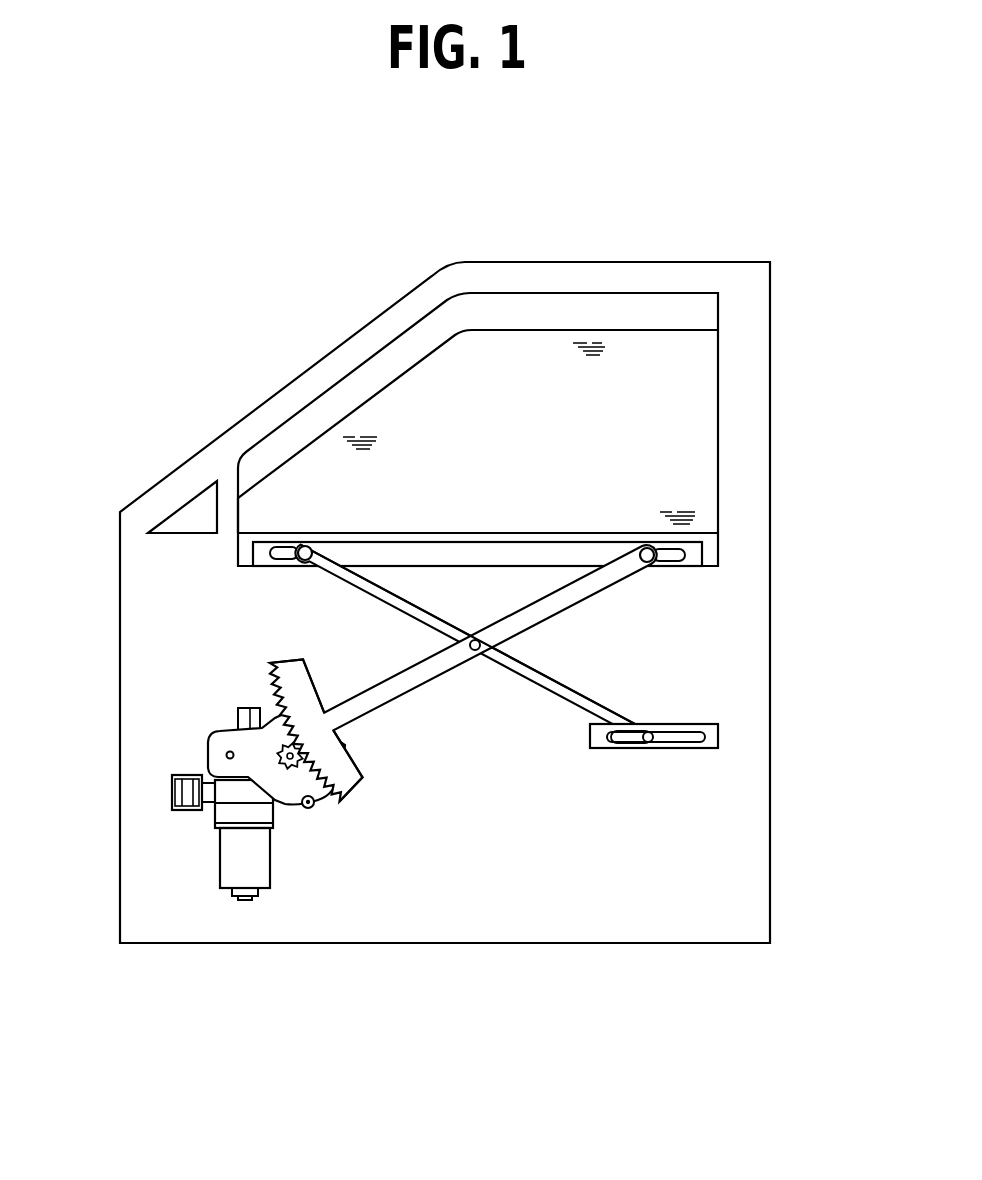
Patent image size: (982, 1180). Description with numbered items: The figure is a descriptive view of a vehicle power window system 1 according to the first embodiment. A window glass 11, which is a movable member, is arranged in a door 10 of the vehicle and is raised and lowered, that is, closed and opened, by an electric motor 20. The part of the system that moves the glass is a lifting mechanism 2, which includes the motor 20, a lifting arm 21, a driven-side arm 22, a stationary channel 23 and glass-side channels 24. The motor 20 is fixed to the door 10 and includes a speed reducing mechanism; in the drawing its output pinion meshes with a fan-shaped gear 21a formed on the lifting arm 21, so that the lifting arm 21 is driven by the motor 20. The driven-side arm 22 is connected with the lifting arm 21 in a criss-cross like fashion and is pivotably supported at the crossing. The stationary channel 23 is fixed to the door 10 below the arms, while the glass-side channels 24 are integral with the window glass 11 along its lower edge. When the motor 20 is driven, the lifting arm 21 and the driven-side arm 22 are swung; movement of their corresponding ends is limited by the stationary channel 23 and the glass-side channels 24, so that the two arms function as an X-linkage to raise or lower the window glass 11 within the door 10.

The power window system 1 is at (203, 376).
The lifting mechanism 2 is at (185, 690).
The door 10 is at (745, 642).
The window glass 11 is at (507, 347).
The electric motor 20 is at (228, 867).
The lifting arm 21 is at (463, 716).
The fan-shaped gear 21a is at (350, 782).
The driven-side arm 22 is at (530, 675).
The stationary channel 23 is at (673, 745).
The glass-side channels 24 is at (693, 550).